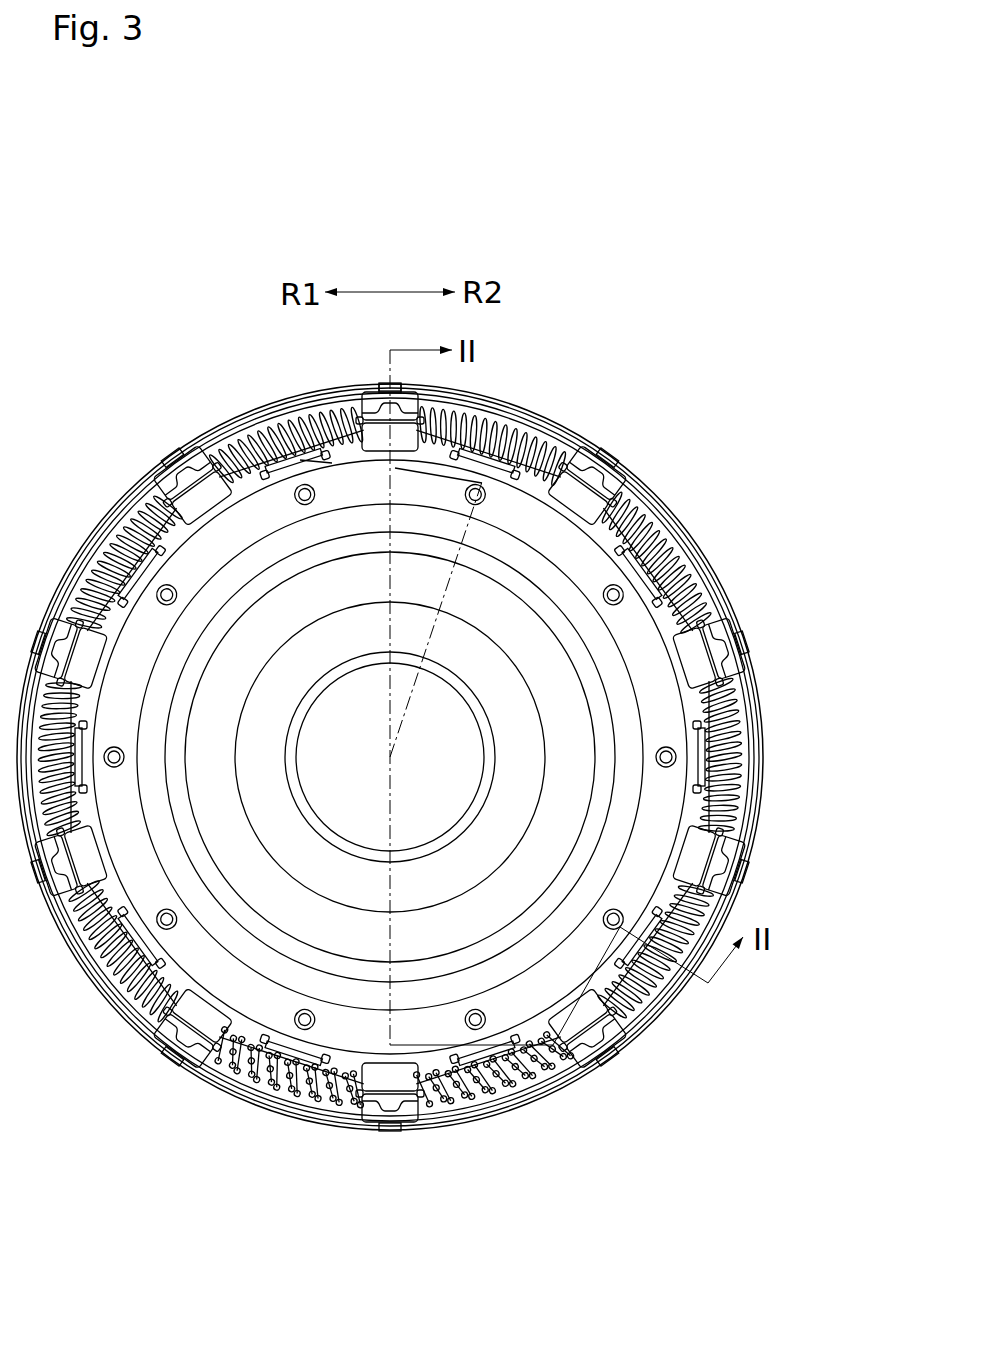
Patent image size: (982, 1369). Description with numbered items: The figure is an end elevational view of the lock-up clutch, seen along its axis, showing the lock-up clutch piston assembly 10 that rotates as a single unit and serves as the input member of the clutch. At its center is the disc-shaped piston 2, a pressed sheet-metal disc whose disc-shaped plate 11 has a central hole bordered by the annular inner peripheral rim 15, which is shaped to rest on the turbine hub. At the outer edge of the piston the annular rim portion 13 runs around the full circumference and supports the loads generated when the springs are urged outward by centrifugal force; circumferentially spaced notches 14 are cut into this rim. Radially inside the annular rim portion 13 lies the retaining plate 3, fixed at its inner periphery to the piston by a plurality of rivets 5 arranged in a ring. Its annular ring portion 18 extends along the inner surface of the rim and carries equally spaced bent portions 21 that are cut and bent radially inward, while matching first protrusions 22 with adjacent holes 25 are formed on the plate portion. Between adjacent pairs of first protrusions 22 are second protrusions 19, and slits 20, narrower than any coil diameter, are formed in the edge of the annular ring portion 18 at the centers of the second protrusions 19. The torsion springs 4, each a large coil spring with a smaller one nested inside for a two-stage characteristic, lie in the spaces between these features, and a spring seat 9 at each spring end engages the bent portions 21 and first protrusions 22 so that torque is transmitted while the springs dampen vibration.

The disc-shaped piston 2 is at (451, 757).
The retaining plate 3 is at (575, 562).
The torsion springs 4 is at (281, 1103).
The rivets 5 is at (303, 508).
The spring seat 9 is at (228, 1097).
The lock-up clutch piston assembly 10 is at (628, 370).
The disc-shaped plate 11 is at (543, 655).
The annular rim portion 13 is at (535, 408).
The notches 14 is at (170, 457).
The annular inner peripheral rim 15 is at (485, 742).
The annular ring portion 18 is at (257, 417).
The second protrusions 19 is at (310, 460).
The slits 20 is at (303, 403).
The bent portions 21 is at (423, 385).
The first protrusions 22 is at (380, 440).
The holes 25 is at (402, 443).